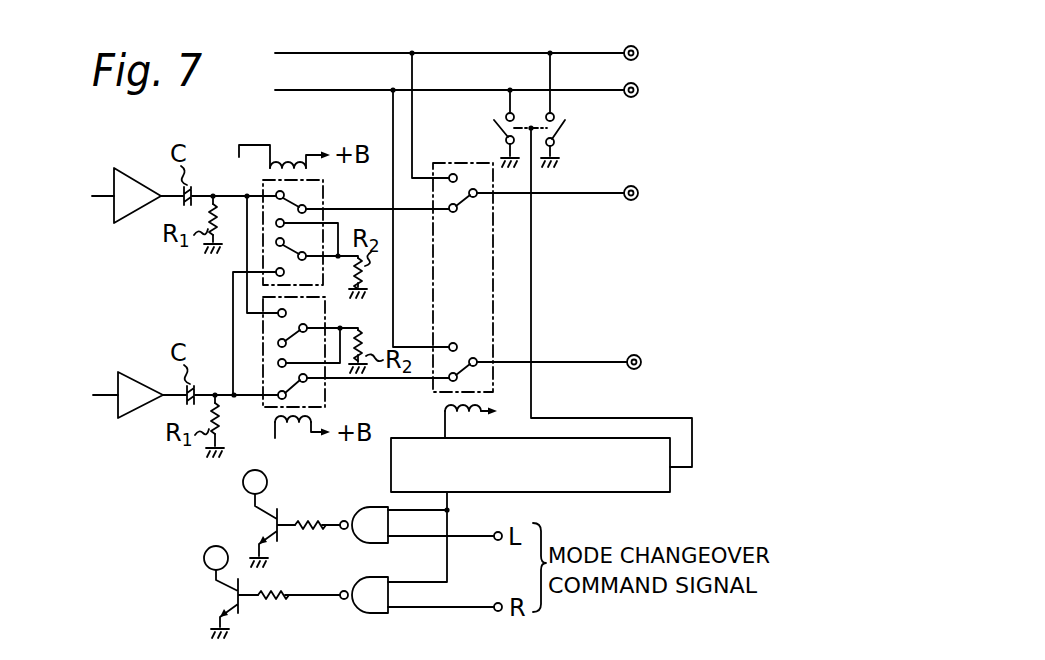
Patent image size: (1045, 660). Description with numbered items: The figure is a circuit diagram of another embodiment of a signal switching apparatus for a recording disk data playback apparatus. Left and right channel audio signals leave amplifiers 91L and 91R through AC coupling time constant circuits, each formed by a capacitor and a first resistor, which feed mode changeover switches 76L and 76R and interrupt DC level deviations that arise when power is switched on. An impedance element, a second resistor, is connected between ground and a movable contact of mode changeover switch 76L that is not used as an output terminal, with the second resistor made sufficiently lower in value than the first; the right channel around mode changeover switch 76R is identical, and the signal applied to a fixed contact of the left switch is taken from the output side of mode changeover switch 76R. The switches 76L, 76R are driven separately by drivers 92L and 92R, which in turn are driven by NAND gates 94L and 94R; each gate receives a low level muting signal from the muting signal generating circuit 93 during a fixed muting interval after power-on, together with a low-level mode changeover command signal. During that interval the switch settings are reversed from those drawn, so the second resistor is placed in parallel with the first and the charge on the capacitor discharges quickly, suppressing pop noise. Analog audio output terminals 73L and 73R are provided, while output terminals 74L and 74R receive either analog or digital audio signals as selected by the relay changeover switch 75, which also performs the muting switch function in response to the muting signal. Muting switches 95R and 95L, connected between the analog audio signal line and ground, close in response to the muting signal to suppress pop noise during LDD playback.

The output terminal 73L is at (639, 53).
The output terminal 73R is at (639, 90).
The output terminal 74L is at (639, 193).
The output terminal 74R is at (642, 362).
The changeover switch 75 is at (495, 251).
The mode changeover switch 76L is at (324, 183).
The mode changeover switch 76R is at (326, 307).
The amplifier 91L is at (135, 227).
The amplifier 91R is at (138, 427).
The driver 92L is at (265, 524).
The driver 92R is at (223, 596).
The muting signal generating circuit 93 is at (420, 436).
The NAND gate 94L is at (365, 506).
The NAND gate 94R is at (358, 612).
The muting switch 95L is at (571, 128).
The muting switch 95R is at (497, 126).